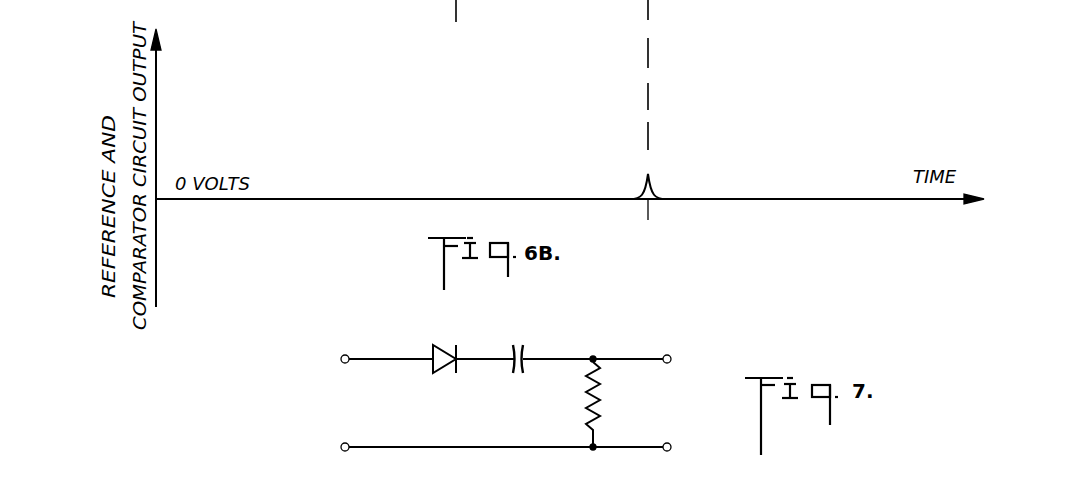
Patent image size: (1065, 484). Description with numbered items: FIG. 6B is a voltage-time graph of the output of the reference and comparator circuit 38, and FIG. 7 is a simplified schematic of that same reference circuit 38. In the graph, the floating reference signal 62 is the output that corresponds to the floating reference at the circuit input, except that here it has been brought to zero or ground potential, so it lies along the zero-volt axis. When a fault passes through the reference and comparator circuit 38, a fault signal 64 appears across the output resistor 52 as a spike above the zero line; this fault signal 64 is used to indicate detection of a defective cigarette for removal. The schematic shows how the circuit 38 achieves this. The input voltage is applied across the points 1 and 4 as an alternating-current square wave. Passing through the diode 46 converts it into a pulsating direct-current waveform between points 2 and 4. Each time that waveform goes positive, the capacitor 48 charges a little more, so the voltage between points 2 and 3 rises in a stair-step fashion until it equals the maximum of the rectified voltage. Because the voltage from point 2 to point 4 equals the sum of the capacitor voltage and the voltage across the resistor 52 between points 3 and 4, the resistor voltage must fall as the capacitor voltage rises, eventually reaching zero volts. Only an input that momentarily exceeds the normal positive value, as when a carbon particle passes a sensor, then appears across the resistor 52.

In FIG. 6B, the floating reference signal 62 is at (388, 185).
In FIG. 6B, the fault signal 64 is at (651, 179).
In FIG. 7, the diode 46 is at (444, 350).
In FIG. 7, the capacitor 48 is at (517, 345).
In FIG. 7, the output resistor 52 is at (609, 396).
In FIG. 7, the reference and comparator circuit 38 is at (524, 453).
In FIG. 7, the point 1 is at (372, 362).
In FIG. 7, the point 2 is at (474, 363).
In FIG. 7, the point 3 is at (561, 355).
In FIG. 7, the point 4 is at (625, 450).